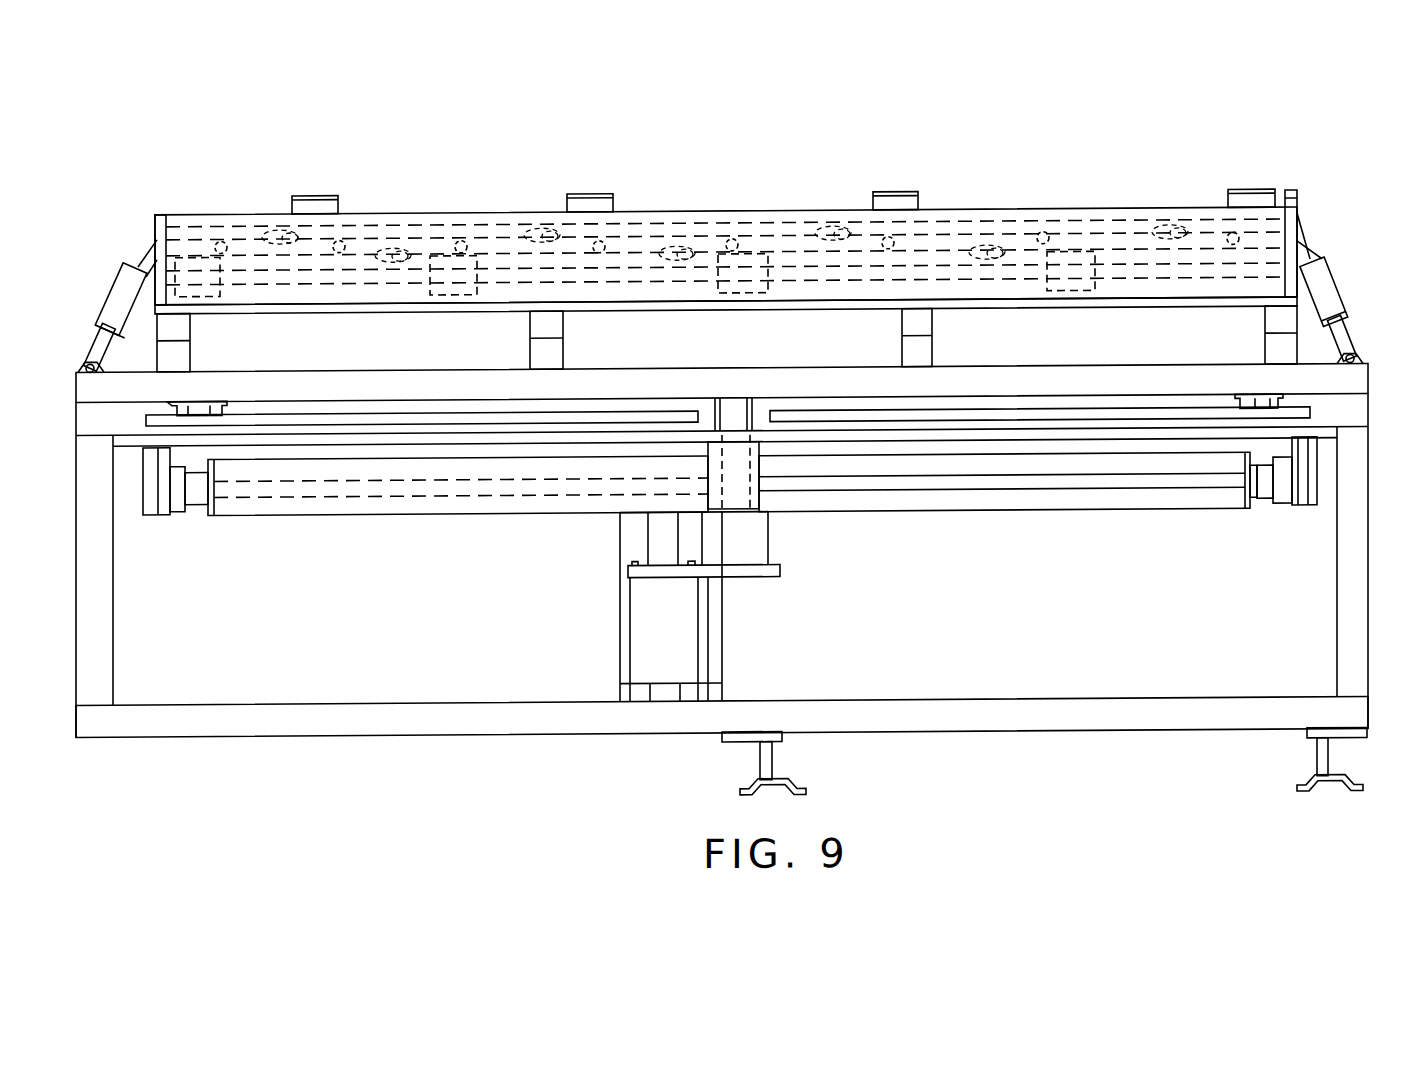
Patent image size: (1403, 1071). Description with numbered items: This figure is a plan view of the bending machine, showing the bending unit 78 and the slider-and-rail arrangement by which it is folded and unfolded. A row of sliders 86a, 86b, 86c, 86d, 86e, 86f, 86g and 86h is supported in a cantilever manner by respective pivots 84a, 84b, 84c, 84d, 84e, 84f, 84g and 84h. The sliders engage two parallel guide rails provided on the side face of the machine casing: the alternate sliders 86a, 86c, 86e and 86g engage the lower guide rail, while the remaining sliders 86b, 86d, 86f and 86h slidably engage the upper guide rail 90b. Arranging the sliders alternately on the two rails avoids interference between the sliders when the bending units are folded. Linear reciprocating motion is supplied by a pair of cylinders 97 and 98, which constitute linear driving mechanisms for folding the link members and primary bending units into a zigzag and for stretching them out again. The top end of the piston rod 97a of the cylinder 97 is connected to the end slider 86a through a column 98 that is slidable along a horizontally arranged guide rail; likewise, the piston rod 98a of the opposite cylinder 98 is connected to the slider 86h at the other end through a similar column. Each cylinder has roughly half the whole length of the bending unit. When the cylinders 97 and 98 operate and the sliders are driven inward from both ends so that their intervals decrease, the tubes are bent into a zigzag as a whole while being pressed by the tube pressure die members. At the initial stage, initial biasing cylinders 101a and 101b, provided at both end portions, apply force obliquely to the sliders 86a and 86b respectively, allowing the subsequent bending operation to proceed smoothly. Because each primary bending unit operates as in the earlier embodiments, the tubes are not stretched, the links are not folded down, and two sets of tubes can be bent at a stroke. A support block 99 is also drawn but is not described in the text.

The bending unit 78 is at (1292, 181).
The pivot 84a is at (221, 243).
The pivot 84b is at (345, 243).
The pivot 84c is at (461, 243).
The pivot 84d is at (608, 247).
The pivot 84e is at (731, 243).
The pivot 84f is at (881, 245).
The pivot 84g is at (1043, 239).
The pivot 84h is at (1227, 244).
The slider 86a is at (205, 299).
The slider 86b is at (318, 210).
The slider 86c is at (436, 299).
The slider 86d is at (592, 208).
The slider 86e is at (720, 300).
The slider 86f is at (897, 206).
The slider 86g is at (1052, 300).
The slider 86h is at (1253, 205).
The upper guide rail 90b is at (500, 214).
The cylinder 97 is at (1098, 507).
The piston rod 97a is at (325, 498).
The cylinder 98 is at (186, 360).
The piston rod 98a is at (930, 492).
The support block 99 is at (1275, 353).
The initial biasing cylinder 101a is at (115, 316).
The initial biasing cylinder 101b is at (1328, 309).